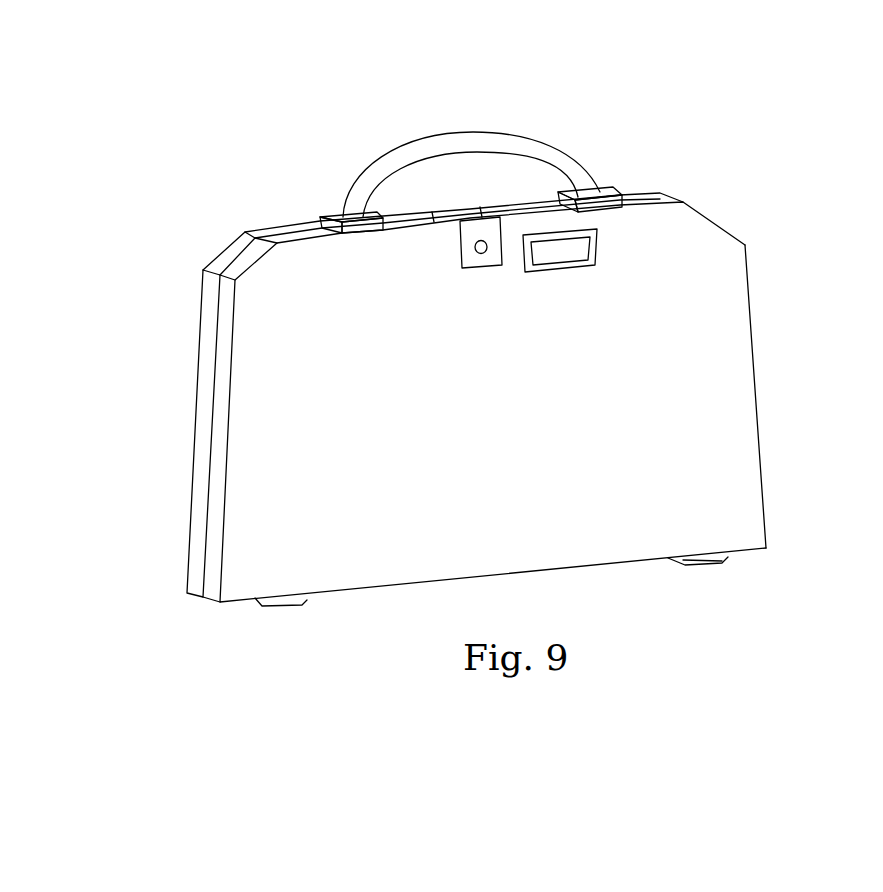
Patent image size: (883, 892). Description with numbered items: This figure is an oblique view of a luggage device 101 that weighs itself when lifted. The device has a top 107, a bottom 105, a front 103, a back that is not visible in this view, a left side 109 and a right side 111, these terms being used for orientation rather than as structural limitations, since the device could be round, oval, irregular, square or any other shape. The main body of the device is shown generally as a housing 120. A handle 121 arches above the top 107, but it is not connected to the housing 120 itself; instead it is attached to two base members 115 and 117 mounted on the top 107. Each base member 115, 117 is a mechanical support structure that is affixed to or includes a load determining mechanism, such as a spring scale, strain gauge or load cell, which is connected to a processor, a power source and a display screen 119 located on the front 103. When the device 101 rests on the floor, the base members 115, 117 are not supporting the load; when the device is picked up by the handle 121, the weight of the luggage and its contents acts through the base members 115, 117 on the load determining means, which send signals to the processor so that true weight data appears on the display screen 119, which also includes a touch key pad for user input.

The luggage device 101 is at (712, 190).
The front 103 is at (737, 360).
The bottom 105 is at (276, 605).
The top 107 is at (290, 227).
The left side 109 is at (213, 382).
The right side 111 is at (760, 448).
The base member 115 is at (358, 231).
The base member 117 is at (610, 204).
The display screen 119 is at (558, 255).
The housing 120 is at (712, 284).
The handle 121 is at (511, 143).